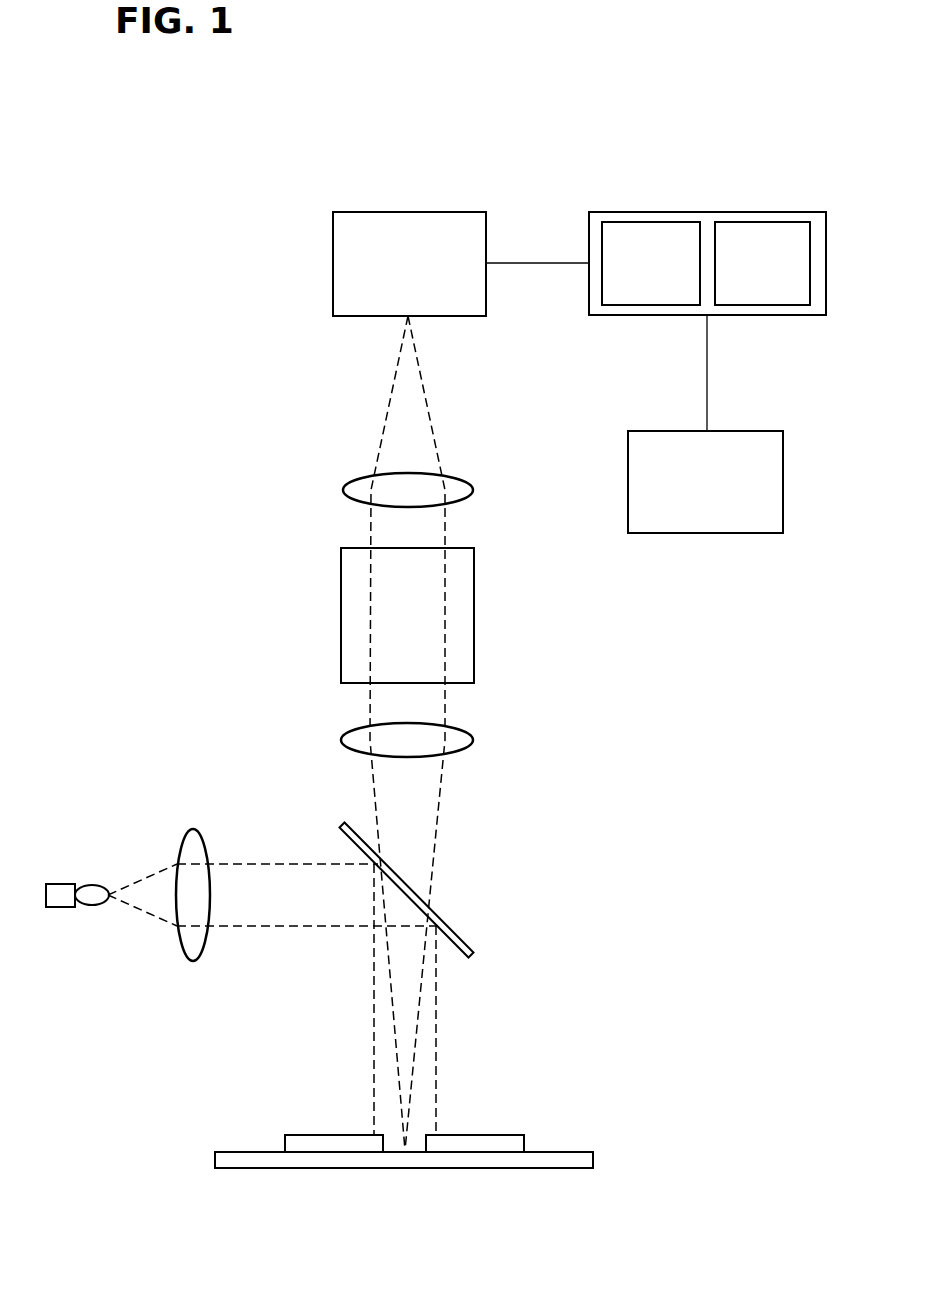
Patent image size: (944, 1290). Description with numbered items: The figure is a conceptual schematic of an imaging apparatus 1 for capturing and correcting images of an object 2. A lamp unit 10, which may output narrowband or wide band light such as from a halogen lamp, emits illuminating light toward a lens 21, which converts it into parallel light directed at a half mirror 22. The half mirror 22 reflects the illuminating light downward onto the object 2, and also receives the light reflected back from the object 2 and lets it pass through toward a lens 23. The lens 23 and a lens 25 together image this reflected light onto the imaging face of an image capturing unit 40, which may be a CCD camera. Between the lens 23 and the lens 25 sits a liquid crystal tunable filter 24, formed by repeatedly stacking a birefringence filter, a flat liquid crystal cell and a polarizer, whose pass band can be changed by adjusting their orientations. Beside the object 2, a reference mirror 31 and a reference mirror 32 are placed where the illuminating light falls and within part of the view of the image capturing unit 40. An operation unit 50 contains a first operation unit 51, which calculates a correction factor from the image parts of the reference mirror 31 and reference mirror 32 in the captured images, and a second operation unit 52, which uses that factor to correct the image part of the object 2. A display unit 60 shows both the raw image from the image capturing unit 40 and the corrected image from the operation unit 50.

The imaging apparatus 1 is at (163, 152).
The object 2 is at (565, 1152).
The lamp unit 10 is at (92, 885).
The lens 21 is at (193, 829).
The half mirror 22 is at (336, 836).
The lens 23 is at (341, 740).
The liquid crystal tunable filter 24 is at (341, 612).
The lens 25 is at (343, 490).
The reference mirror 31 is at (312, 1135).
The reference mirror 32 is at (496, 1135).
The image capturing unit 40 is at (450, 212).
The operation unit 50 is at (748, 212).
The first operation unit 51 is at (660, 222).
The second operation unit 52 is at (811, 257).
The display unit 60 is at (745, 431).